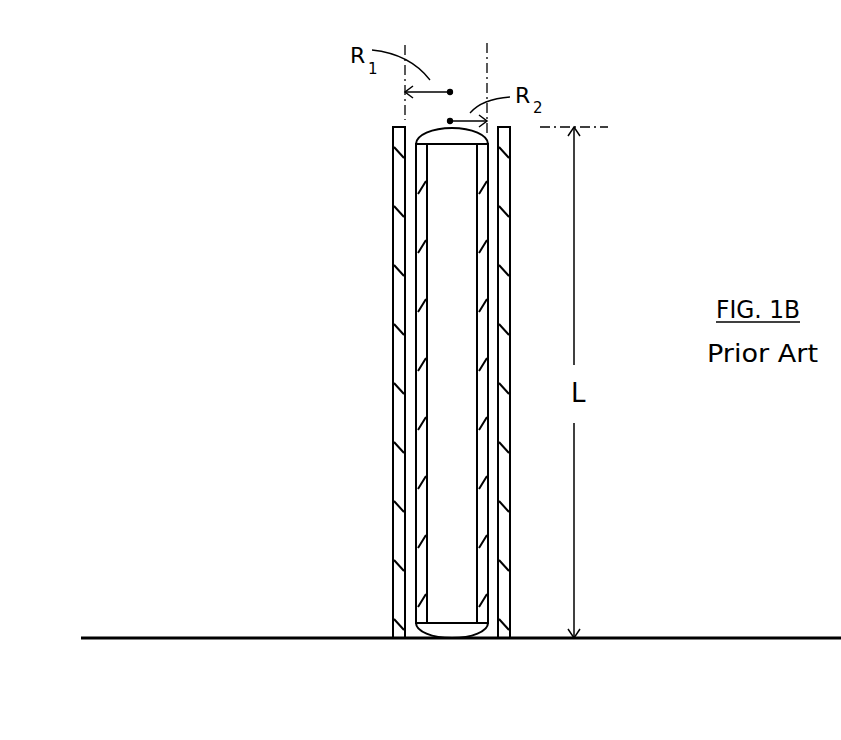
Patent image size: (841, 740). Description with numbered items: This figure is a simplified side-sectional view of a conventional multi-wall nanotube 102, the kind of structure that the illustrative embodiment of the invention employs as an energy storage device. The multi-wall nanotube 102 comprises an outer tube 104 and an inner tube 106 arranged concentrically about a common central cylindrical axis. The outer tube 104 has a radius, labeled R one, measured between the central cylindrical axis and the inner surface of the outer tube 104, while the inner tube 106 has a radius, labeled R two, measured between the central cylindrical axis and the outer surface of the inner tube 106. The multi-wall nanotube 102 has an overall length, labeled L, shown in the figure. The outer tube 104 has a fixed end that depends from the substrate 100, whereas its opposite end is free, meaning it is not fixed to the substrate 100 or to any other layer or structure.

The substrate 100 is at (540, 677).
The multi-wall nanotube 102 is at (357, 382).
The outer tube 104 is at (398, 360).
The inner tube 106 is at (468, 412).